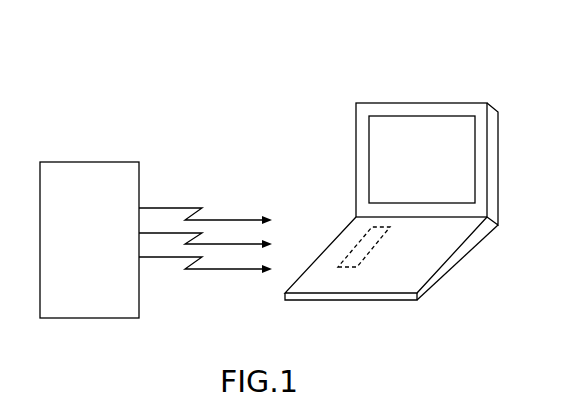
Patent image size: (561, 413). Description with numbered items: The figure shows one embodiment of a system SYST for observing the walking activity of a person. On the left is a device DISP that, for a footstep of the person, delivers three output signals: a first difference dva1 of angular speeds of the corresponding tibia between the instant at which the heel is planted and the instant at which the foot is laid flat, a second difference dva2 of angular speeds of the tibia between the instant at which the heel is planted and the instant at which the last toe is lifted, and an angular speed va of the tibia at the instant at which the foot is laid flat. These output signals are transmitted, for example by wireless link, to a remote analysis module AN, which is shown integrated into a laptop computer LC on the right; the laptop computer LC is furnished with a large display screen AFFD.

The system SYST is at (243, 118).
The device DISP is at (86, 162).
The first difference of angular speeds dva1 is at (205, 211).
The second difference of angular speeds dva2 is at (205, 236).
The angular speed va is at (205, 261).
The display screen AFFD is at (399, 116).
The remote analysis module AN is at (375, 246).
The laptop computer LC is at (391, 173).